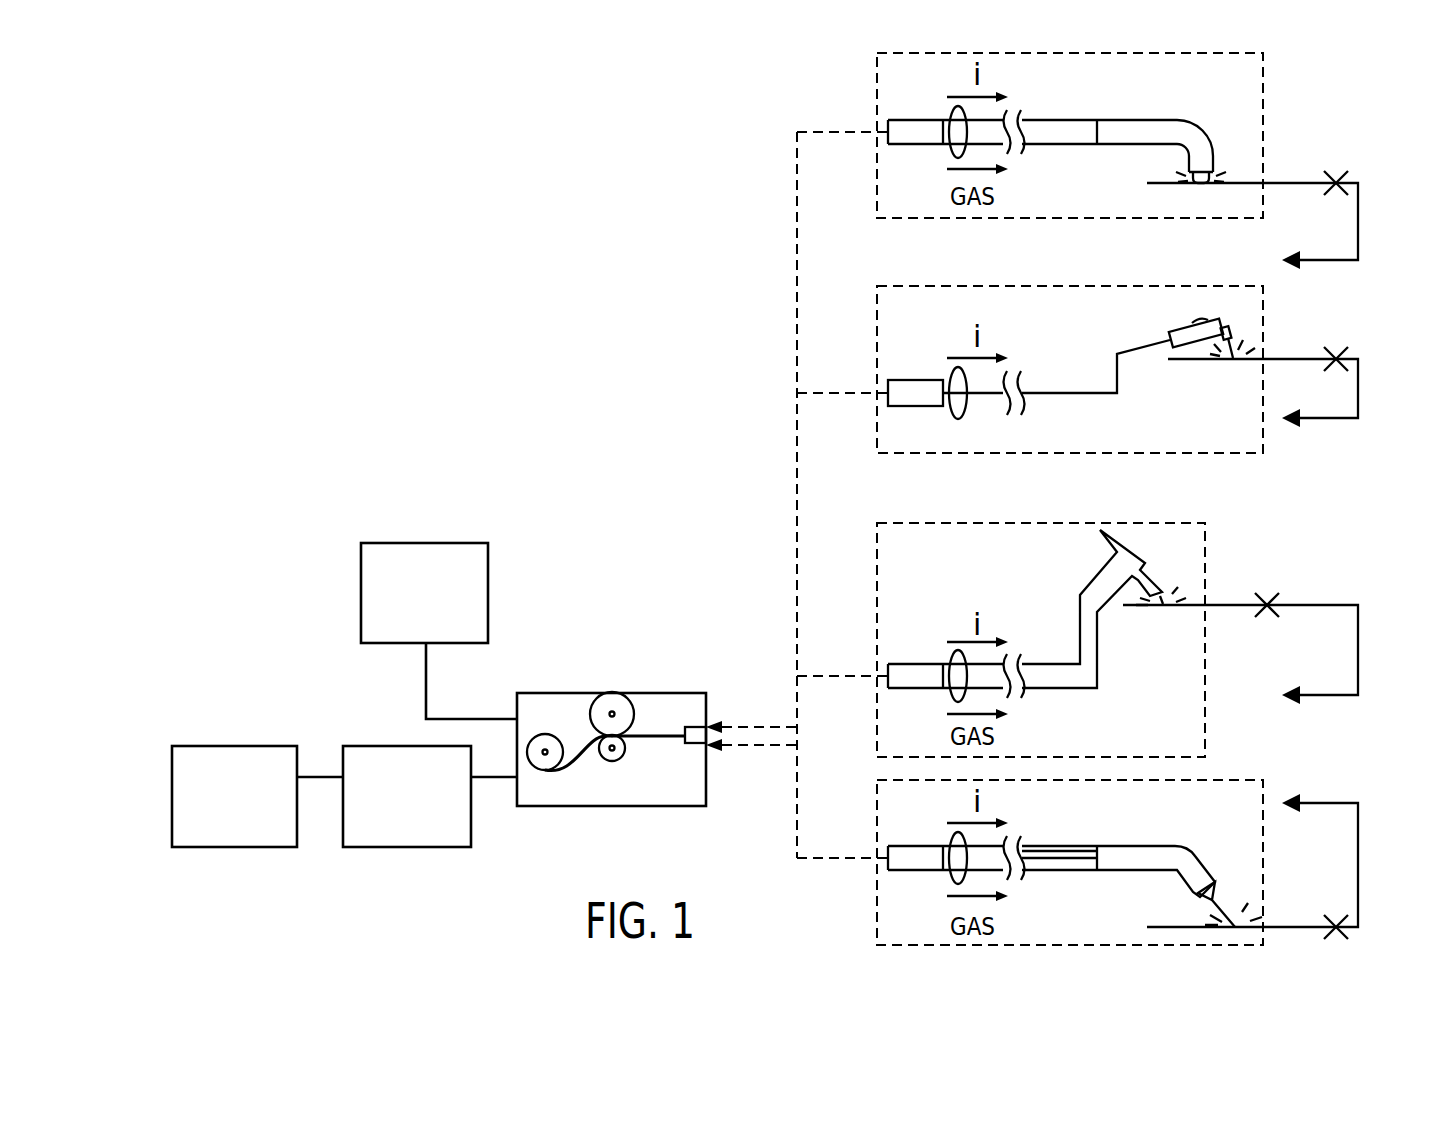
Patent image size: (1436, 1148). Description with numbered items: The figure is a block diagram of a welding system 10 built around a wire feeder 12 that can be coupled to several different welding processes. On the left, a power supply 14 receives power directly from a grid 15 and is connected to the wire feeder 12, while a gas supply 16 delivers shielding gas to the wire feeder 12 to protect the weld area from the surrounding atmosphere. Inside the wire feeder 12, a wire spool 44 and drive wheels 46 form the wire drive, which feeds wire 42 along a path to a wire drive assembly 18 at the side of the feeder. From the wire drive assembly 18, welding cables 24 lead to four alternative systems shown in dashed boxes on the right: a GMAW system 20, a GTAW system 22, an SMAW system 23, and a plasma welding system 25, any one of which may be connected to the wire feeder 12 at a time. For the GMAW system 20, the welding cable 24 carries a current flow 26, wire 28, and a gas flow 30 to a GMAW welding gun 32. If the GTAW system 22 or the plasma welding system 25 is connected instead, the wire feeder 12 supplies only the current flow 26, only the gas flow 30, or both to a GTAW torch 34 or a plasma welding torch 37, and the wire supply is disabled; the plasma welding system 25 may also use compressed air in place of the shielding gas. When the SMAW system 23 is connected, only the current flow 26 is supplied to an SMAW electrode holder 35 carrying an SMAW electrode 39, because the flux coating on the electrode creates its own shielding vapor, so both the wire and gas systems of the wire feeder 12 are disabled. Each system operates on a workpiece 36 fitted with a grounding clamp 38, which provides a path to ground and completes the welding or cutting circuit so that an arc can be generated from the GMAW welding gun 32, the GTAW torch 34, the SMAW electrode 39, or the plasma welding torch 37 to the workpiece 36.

The welding system 10 is at (708, 456).
The wire feeder 12 is at (610, 806).
The power supply 14 is at (408, 847).
The grid 15 is at (233, 746).
The gas supply 16 is at (421, 543).
The wire drive assembly 18 is at (695, 733).
The GMAW system 20 is at (877, 906).
The GTAW system 22 is at (877, 720).
The SMAW system 23 is at (877, 446).
The welding cable 24 is at (950, 112).
The plasma welding system 25 is at (877, 182).
The current flow 26 is at (1048, 662).
The wire 28 is at (1080, 855).
The gas flow 30 is at (1060, 690).
The GMAW welding gun 32 is at (1185, 846).
The GTAW torch 34 is at (1120, 552).
The SMAW electrode holder 35 is at (1180, 335).
The workpiece 36 is at (1295, 183).
The plasma welding torch 37 is at (1205, 130).
The grounding clamp 38 is at (1338, 173).
The SMAW electrode 39 is at (1232, 340).
The wire 42 is at (668, 740).
The wire spool 44 is at (545, 734).
The drive wheels 46 is at (626, 746).